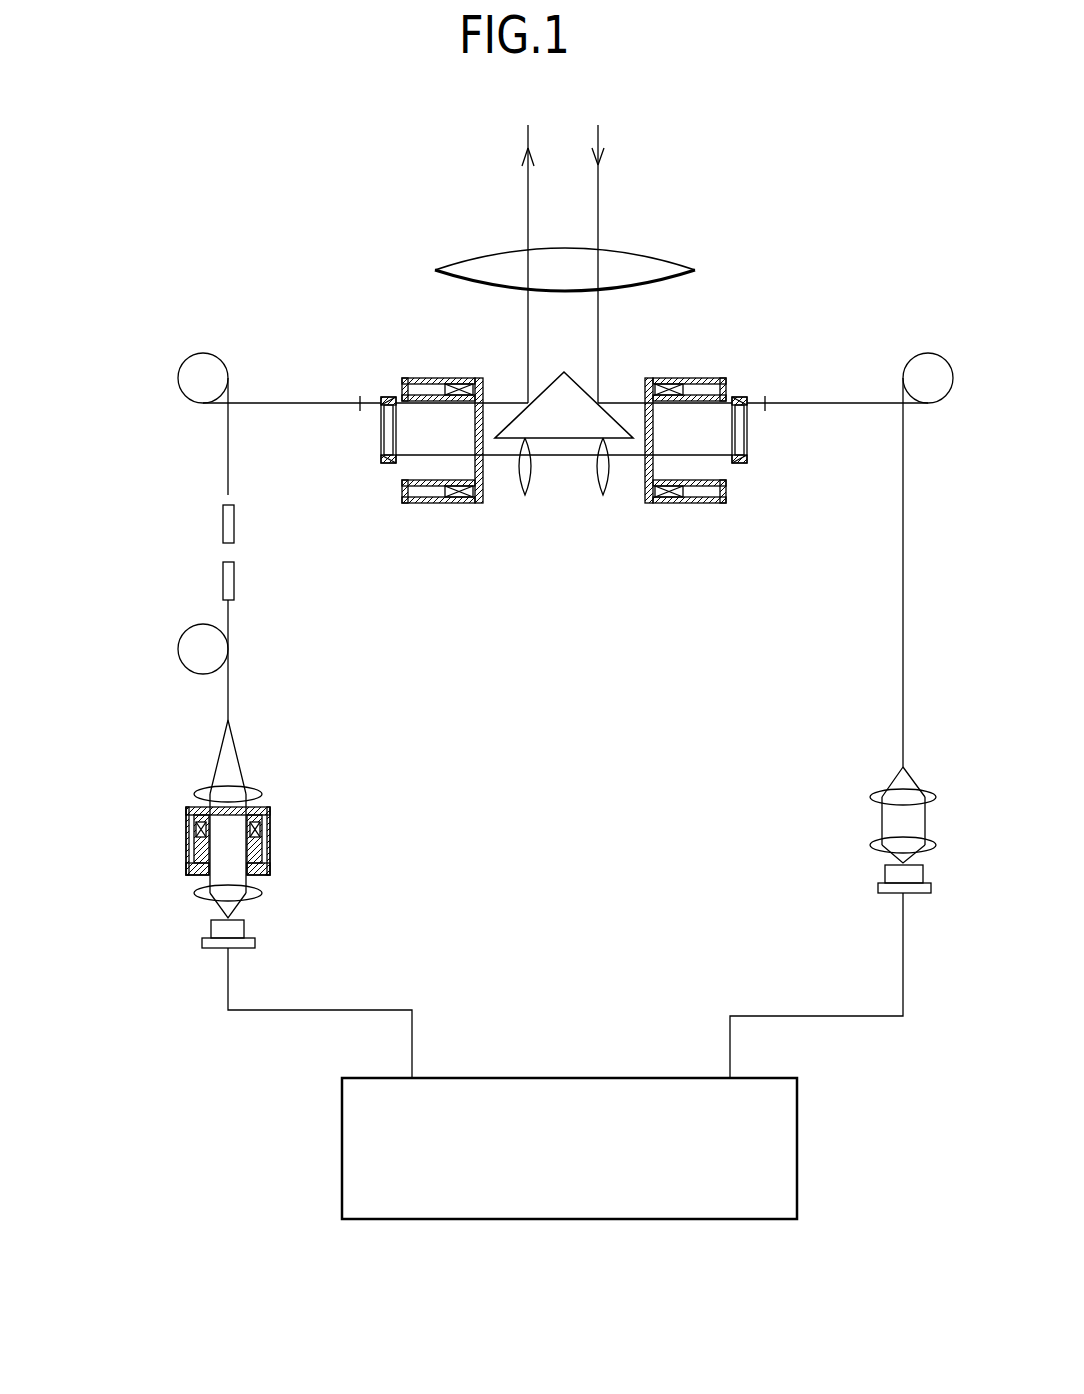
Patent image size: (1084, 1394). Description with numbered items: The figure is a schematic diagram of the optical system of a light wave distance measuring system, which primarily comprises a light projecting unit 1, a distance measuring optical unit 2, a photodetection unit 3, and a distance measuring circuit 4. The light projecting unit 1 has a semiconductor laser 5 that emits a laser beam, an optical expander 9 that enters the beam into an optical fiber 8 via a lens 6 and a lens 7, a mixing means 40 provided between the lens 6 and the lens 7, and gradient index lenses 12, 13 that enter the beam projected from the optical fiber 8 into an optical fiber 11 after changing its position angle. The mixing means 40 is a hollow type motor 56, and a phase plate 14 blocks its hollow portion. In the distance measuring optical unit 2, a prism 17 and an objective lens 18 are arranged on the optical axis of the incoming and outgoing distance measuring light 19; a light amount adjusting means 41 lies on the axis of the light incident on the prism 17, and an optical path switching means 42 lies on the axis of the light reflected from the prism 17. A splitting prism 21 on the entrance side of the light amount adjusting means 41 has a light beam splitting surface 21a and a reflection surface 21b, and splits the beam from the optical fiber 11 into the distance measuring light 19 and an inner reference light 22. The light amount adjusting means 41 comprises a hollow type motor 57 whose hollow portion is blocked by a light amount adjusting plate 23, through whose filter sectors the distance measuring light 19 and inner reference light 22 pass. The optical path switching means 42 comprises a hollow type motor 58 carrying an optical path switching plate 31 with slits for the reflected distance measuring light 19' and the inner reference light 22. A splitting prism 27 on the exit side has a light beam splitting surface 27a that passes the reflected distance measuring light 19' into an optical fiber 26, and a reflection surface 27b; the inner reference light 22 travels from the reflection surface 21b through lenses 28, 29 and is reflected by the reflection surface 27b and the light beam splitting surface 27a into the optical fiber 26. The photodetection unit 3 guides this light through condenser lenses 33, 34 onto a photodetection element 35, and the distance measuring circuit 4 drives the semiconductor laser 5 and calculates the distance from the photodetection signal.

The light projecting unit 1 is at (128, 702).
The distance measuring optical unit 2 is at (700, 255).
The photodetection unit 3 is at (935, 783).
The distance measuring circuit 4 is at (646, 1078).
The semiconductor laser 5 is at (256, 943).
The lens 6 is at (262, 893).
The lens 7 is at (253, 793).
The optical fiber 8 is at (229, 676).
The optical expander 9 is at (190, 785).
The optical fiber 11 is at (265, 402).
The gradient index lens 12 is at (235, 580).
The gradient index lens 13 is at (223, 522).
The phase plate 14 is at (250, 808).
The prism 17 is at (556, 395).
The objective lens 18 is at (478, 256).
The distance measuring light 19 is at (478, 264).
The reflected distance measuring light 19' is at (658, 264).
The splitting prism 21 is at (388, 397).
The light beam splitting surface 21a is at (381, 404).
The reflection surface 21b is at (386, 465).
The inner reference light 22 is at (565, 458).
The light amount adjusting plate 23 is at (484, 470).
The optical fiber 26 is at (847, 402).
The splitting prism 27 is at (740, 397).
The light beam splitting surface 27a is at (748, 404).
The reflection surface 27b is at (748, 462).
The lens 28 is at (525, 496).
The lens 29 is at (603, 496).
The optical path switching plate 31 is at (642, 470).
The condenser lens 33 is at (878, 790).
The condenser lens 34 is at (880, 840).
The photodetection element 35 is at (884, 872).
The mixing means 40 is at (183, 855).
The light amount adjusting means 41 is at (435, 505).
The optical path switching means 42 is at (692, 505).
The hollow type motor 56 is at (271, 838).
The hollow type motor 57 is at (442, 378).
The hollow type motor 58 is at (686, 378).